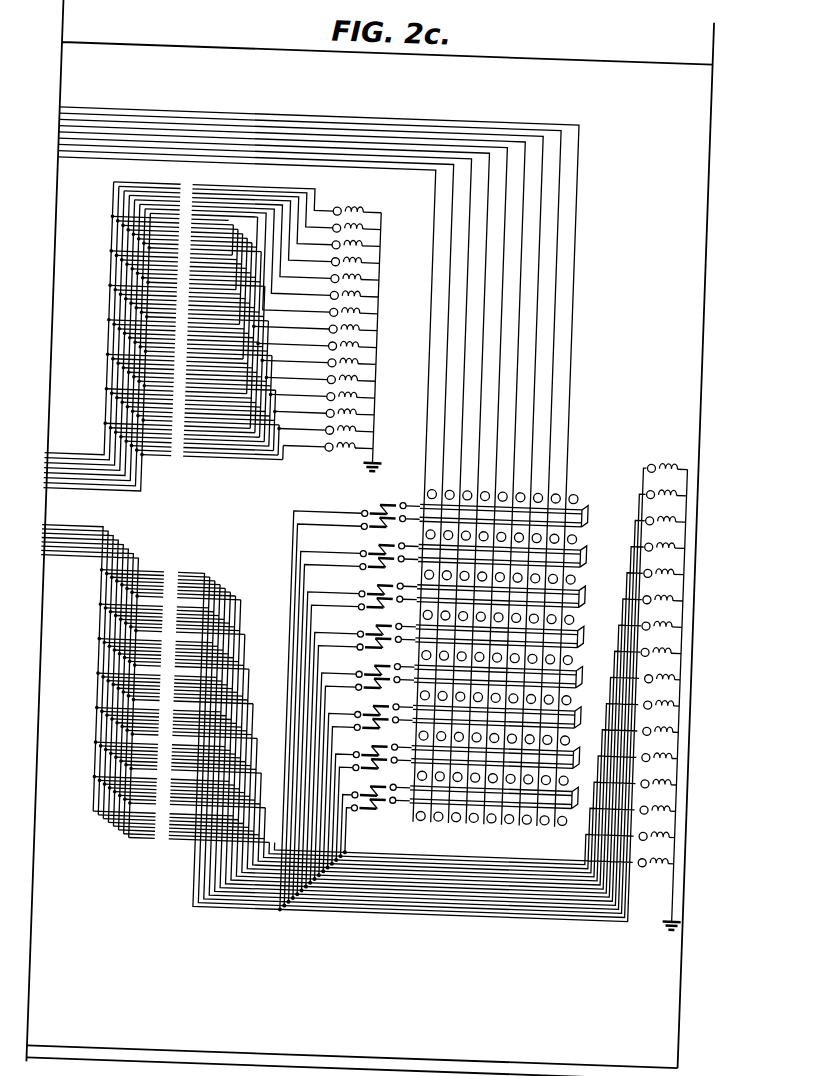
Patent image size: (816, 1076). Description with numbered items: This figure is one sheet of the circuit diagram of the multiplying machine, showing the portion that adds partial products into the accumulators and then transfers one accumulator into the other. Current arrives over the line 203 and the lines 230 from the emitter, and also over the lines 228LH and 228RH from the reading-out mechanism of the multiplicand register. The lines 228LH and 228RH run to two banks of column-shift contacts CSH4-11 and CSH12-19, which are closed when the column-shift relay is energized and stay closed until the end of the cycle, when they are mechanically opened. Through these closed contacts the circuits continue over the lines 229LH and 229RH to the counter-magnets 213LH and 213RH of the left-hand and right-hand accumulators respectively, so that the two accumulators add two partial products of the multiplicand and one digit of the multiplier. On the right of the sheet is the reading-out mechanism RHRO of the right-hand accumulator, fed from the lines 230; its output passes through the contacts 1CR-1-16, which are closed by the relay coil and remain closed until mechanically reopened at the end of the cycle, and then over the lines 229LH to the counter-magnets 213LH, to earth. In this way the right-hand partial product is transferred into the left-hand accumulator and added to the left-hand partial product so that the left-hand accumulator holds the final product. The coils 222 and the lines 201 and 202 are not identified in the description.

The bottom conductor line 201 is at (480, 1058).
The bottom conductor line 202 is at (378, 1046).
The line 203 is at (422, 106).
The lines 230 is at (333, 113).
The reading-out mechanism RHRO is at (603, 478).
The contacts 1CR-1-16 is at (397, 519).
The lines 229LH is at (478, 901).
The lines 229RH is at (322, 438).
The counter-magnets 213LH is at (684, 440).
The counter-magnets 213RH is at (369, 281).
The lines 228LH is at (137, 516).
The lines 228RH is at (138, 494).
The contacts CSH4-11 is at (120, 278).
The contacts CSH12-19 is at (124, 674).
The relay coil 222 is at (231, 513).